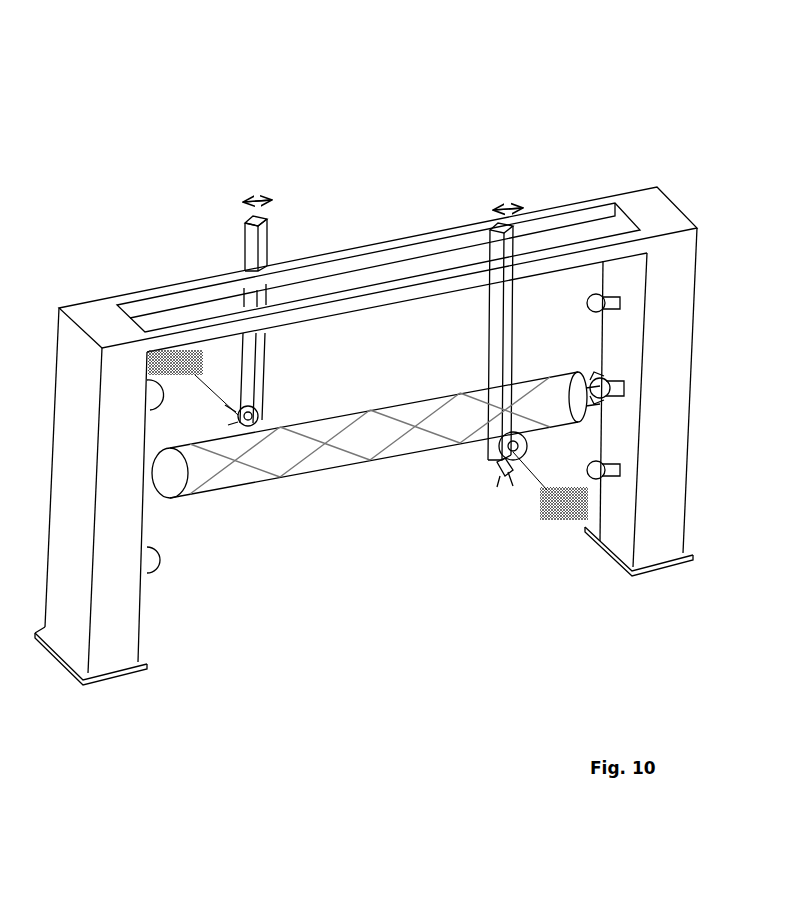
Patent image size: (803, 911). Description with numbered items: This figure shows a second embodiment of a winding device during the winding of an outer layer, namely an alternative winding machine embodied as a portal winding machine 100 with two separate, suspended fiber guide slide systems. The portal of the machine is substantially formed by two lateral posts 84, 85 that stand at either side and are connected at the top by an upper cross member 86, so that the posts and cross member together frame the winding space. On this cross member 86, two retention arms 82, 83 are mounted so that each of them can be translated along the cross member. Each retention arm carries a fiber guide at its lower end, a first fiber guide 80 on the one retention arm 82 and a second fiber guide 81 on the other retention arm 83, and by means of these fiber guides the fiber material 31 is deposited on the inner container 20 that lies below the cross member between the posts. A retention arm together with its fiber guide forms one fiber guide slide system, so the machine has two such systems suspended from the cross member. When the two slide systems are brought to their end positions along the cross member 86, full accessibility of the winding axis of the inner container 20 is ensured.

The portal winding machine 100 is at (466, 110).
The inner container 20 is at (326, 462).
The fiber material 31 is at (403, 432).
The fiber guide 80 is at (258, 417).
The fiber guide 81 is at (487, 457).
The retention arm 82 is at (257, 373).
The retention arm 83 is at (488, 313).
The lateral post 84 is at (130, 615).
The lateral post 85 is at (677, 320).
The upper cross member 86 is at (413, 237).